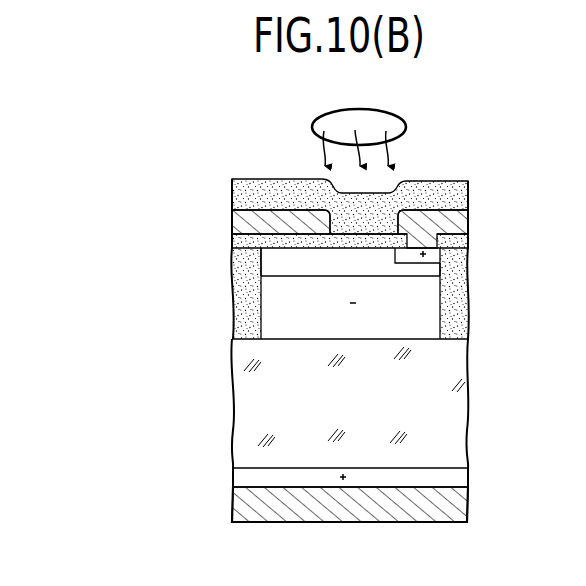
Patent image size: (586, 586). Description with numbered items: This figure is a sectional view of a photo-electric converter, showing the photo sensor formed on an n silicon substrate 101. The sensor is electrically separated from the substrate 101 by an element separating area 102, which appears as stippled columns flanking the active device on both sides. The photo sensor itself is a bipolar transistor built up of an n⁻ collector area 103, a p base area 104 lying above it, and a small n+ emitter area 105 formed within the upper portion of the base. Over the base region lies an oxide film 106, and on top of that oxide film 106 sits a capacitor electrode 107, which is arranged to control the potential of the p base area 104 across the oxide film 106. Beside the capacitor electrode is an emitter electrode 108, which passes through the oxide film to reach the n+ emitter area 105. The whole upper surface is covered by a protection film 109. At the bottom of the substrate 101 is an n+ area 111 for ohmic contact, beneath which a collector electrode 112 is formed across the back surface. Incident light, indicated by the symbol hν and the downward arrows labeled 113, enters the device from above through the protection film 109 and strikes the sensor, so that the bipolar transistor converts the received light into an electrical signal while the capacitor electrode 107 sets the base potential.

The n silicon substrate 101 is at (448, 428).
The element separating area 102 is at (238, 290).
The n⁻ collector area 103 is at (423, 330).
The p base area 104 is at (372, 262).
The n+ emitter area 105 is at (427, 255).
The oxide film 106 is at (468, 243).
The capacitor electrode 107 is at (279, 210).
The emitter electrode 108 is at (468, 218).
The protection film 109 is at (242, 179).
The n+ area for ohmic contact 111 is at (456, 478).
The collector electrode 112 is at (456, 508).
The incident light hv 113 is at (398, 124).